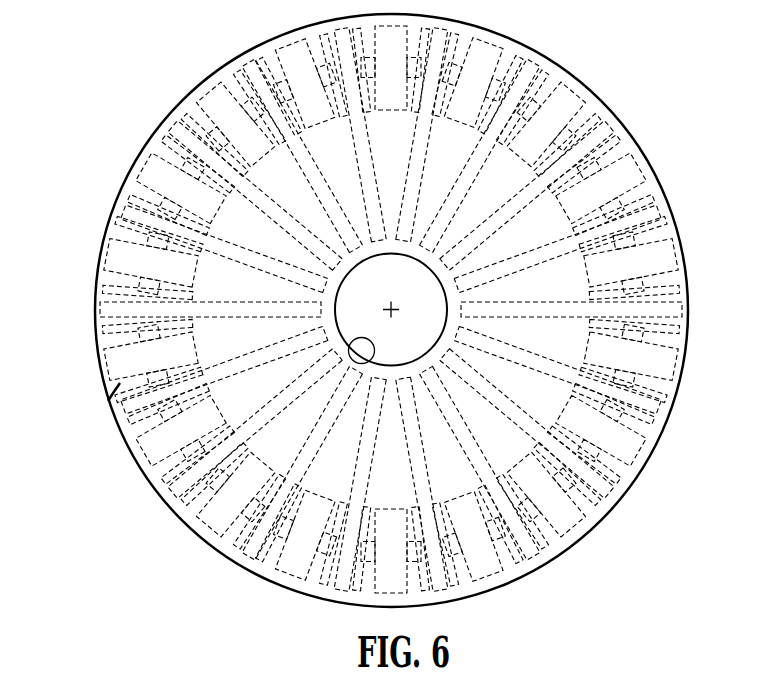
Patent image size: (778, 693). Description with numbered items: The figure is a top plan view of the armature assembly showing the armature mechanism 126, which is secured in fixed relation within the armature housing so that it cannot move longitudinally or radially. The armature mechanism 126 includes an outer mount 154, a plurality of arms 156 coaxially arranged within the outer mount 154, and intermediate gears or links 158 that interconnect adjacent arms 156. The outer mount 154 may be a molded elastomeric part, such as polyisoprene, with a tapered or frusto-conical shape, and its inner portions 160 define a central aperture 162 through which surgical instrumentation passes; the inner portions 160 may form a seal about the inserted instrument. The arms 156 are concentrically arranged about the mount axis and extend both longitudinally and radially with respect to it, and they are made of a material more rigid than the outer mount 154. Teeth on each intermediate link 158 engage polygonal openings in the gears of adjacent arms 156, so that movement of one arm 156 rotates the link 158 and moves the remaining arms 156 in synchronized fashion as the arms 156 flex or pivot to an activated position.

The armature mechanism 126 is at (656, 443).
The outer mount 154 is at (122, 382).
The arms 156 is at (427, 114).
The intermediate links 158 is at (138, 164).
The inner portions 160 is at (372, 358).
The central aperture 162 is at (398, 322).